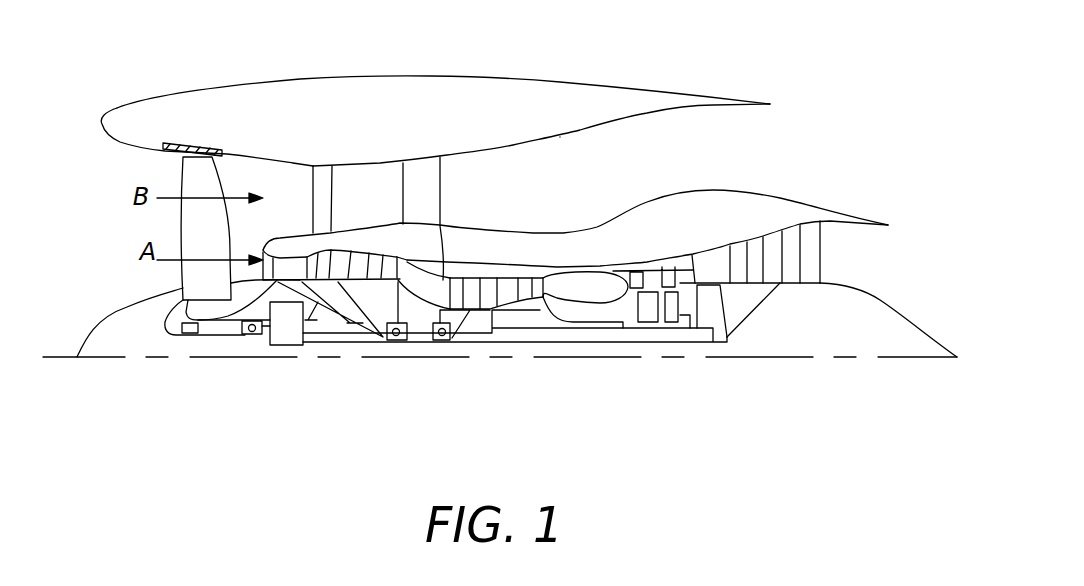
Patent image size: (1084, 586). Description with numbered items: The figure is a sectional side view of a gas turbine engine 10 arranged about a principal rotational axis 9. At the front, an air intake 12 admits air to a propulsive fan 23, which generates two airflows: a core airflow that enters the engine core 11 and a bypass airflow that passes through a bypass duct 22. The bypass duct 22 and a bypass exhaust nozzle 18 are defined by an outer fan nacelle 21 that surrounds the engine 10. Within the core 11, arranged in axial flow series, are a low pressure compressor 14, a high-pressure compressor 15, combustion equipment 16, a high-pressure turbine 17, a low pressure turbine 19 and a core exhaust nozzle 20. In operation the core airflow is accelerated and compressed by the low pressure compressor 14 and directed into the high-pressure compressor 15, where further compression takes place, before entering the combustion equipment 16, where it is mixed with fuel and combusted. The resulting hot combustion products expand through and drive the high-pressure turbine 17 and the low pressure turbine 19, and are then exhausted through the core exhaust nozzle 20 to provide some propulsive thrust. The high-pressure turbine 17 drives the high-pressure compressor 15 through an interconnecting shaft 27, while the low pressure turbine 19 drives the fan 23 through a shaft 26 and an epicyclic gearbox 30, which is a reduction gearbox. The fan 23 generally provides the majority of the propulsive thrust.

The principal rotational axis 9 is at (827, 362).
The gas turbine engine 10 is at (177, 94).
The core 11 is at (553, 262).
The air intake 12 is at (126, 168).
The low pressure compressor 14 is at (358, 258).
The high-pressure compressor 15 is at (508, 290).
The combustion equipment 16 is at (587, 290).
The high-pressure turbine 17 is at (648, 277).
The bypass exhaust nozzle 18 is at (760, 140).
The low pressure turbine 19 is at (793, 238).
The core exhaust nozzle 20 is at (848, 257).
The outer fan nacelle 21 is at (417, 92).
The bypass duct 22 is at (692, 161).
The propulsive fan 23 is at (185, 223).
The shaft 26 is at (502, 344).
The interconnecting shaft 27 is at (560, 302).
The epicyclic gearbox 30 is at (286, 335).